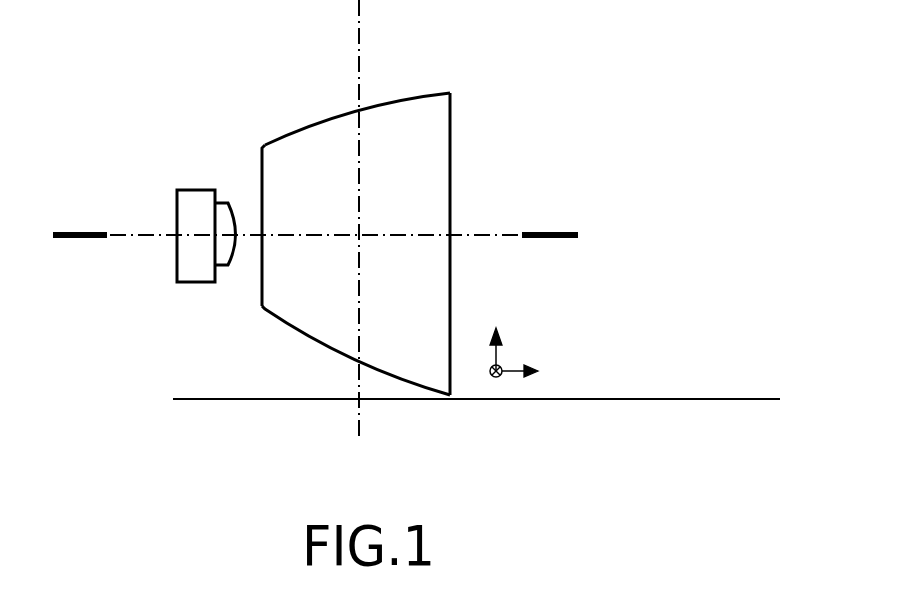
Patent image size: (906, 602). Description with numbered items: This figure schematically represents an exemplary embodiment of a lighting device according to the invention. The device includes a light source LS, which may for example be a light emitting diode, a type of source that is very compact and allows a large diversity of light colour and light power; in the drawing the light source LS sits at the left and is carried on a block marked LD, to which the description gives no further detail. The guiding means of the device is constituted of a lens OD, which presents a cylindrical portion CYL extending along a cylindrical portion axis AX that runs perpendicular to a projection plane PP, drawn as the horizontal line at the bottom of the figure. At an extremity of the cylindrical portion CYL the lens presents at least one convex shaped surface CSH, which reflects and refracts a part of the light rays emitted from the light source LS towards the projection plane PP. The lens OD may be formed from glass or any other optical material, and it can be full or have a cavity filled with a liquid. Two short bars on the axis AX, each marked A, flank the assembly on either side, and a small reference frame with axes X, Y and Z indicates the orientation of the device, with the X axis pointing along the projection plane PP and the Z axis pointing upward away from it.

The laser diode LD is at (152, 149).
The light source LS is at (224, 217).
The cylindrical portion CYL is at (387, 225).
The convex shaped surface CSH is at (318, 110).
The lens OD is at (295, 309).
The cylindrical portion axis AX is at (315, 225).
The projection plane PP is at (702, 385).
The section line A is at (79, 256).
The X axis X is at (531, 373).
The Y axis Y is at (484, 373).
The Z axis Z is at (496, 333).